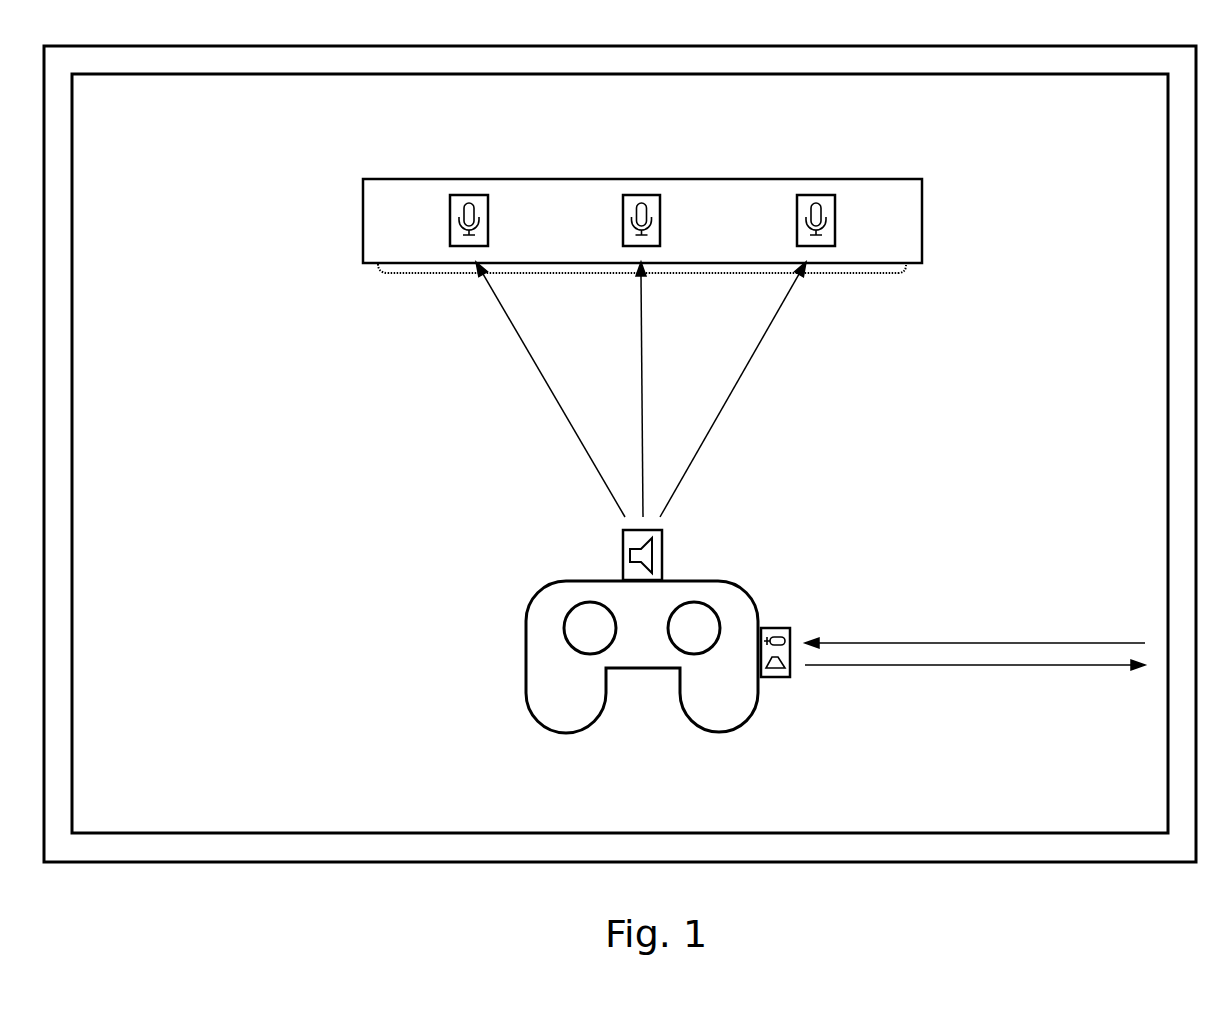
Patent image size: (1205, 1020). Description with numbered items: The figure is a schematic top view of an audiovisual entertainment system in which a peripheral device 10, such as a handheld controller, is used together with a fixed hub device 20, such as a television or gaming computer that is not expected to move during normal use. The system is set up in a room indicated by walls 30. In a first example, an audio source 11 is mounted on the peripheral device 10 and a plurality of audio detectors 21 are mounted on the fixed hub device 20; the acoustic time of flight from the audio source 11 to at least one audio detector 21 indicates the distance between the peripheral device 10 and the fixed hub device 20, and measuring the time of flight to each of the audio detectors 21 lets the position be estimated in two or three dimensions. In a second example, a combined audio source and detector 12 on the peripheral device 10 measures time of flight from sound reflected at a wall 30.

The peripheral device 10 is at (727, 733).
The audio source 11 is at (663, 557).
The combined audio source and detector 12 is at (775, 628).
The fixed hub device 20 is at (922, 220).
The audio detectors 21 is at (466, 196).
The walls 30 is at (1008, 862).